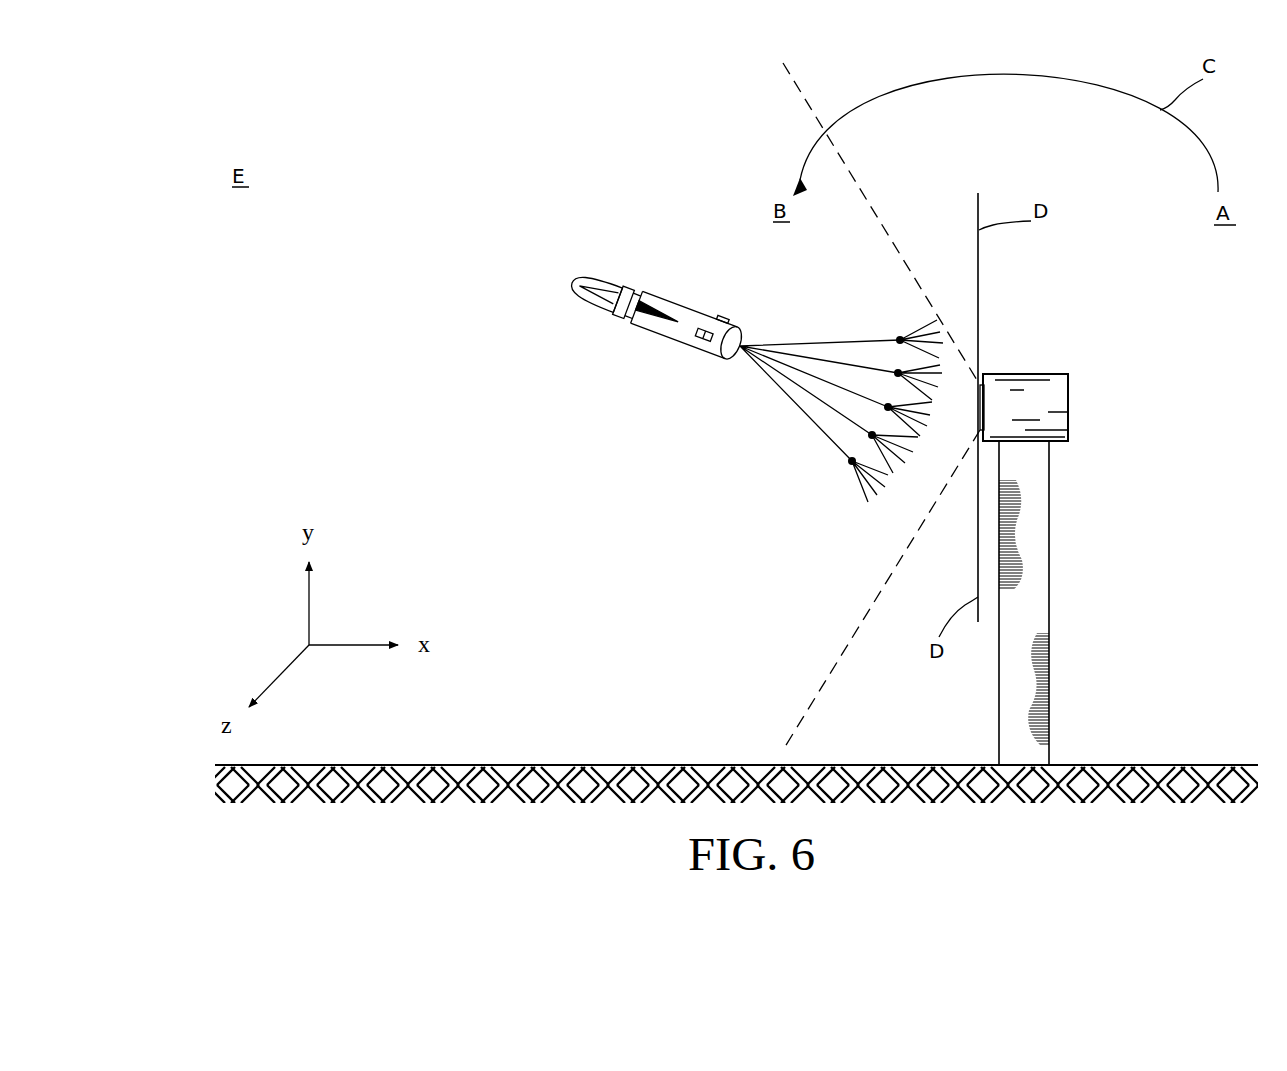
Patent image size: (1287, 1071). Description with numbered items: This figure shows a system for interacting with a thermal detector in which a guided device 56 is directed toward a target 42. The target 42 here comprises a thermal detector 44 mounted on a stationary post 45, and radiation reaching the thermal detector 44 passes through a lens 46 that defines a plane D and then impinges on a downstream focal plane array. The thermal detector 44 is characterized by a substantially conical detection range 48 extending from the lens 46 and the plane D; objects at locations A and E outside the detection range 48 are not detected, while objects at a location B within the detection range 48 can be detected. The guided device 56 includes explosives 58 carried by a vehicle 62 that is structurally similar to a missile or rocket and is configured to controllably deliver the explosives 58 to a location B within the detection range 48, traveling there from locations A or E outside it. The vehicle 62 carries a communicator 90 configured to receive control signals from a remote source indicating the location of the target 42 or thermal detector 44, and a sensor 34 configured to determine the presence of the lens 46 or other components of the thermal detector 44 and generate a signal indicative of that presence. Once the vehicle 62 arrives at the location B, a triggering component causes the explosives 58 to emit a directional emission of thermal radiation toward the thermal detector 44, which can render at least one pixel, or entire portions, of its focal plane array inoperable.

The sensor 34 is at (722, 312).
The target 42 is at (1094, 534).
The thermal detector 44 is at (1025, 407).
The post 45 is at (1050, 562).
The lens 46 is at (982, 385).
The detection range 48 is at (868, 202).
The guided device 56 is at (656, 303).
The explosives 58 is at (832, 478).
The vehicle 62 is at (662, 332).
The communicator 90 is at (699, 340).